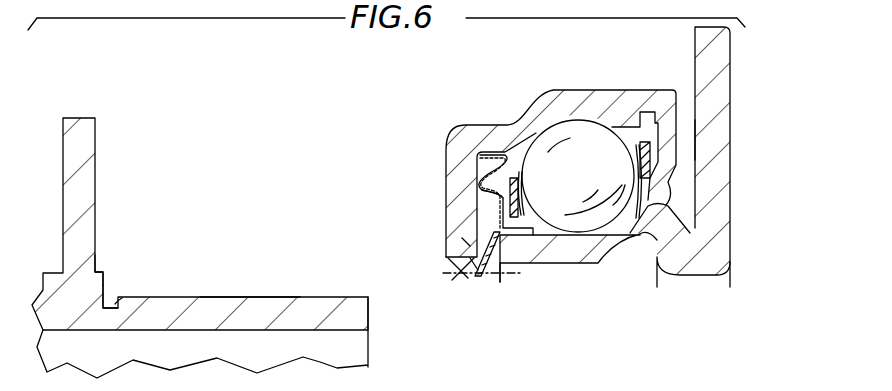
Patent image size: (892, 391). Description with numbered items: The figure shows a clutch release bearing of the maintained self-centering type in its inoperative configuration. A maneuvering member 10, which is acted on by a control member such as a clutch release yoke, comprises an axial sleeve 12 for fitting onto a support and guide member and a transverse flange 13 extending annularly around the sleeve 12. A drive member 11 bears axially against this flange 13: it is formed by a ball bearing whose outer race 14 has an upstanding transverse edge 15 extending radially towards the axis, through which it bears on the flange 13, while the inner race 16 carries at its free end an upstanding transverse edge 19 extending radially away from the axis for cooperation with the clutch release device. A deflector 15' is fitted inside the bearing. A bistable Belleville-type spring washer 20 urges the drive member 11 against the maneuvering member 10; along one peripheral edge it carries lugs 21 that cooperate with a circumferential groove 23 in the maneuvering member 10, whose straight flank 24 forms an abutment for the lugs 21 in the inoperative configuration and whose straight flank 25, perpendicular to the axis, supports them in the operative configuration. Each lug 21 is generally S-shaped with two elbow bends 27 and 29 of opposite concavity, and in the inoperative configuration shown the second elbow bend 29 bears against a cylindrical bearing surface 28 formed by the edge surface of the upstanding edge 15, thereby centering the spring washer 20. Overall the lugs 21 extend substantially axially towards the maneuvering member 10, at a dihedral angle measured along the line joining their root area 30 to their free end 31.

The maneuvering member 10 is at (237, 298).
The drive member 11 is at (734, 94).
The axial sleeve 12 is at (303, 312).
The transverse flange 13 is at (72, 124).
The outer race 14 is at (602, 102).
The upstanding transverse edge 15 is at (465, 190).
The deflector 15' is at (451, 189).
The inner race 16 is at (593, 252).
The upstanding transverse edge 19 is at (720, 138).
The spring washer 20 is at (522, 210).
The lug 21 is at (447, 275).
The circumferential groove 23 is at (113, 292).
The flank 24 is at (106, 290).
The flank 25 is at (118, 302).
The elbow bend 27 is at (473, 278).
The cylindrical bearing surface 28 is at (448, 258).
The elbow bend 29 is at (452, 248).
The root area 30 is at (493, 280).
The free end 31 is at (445, 270).